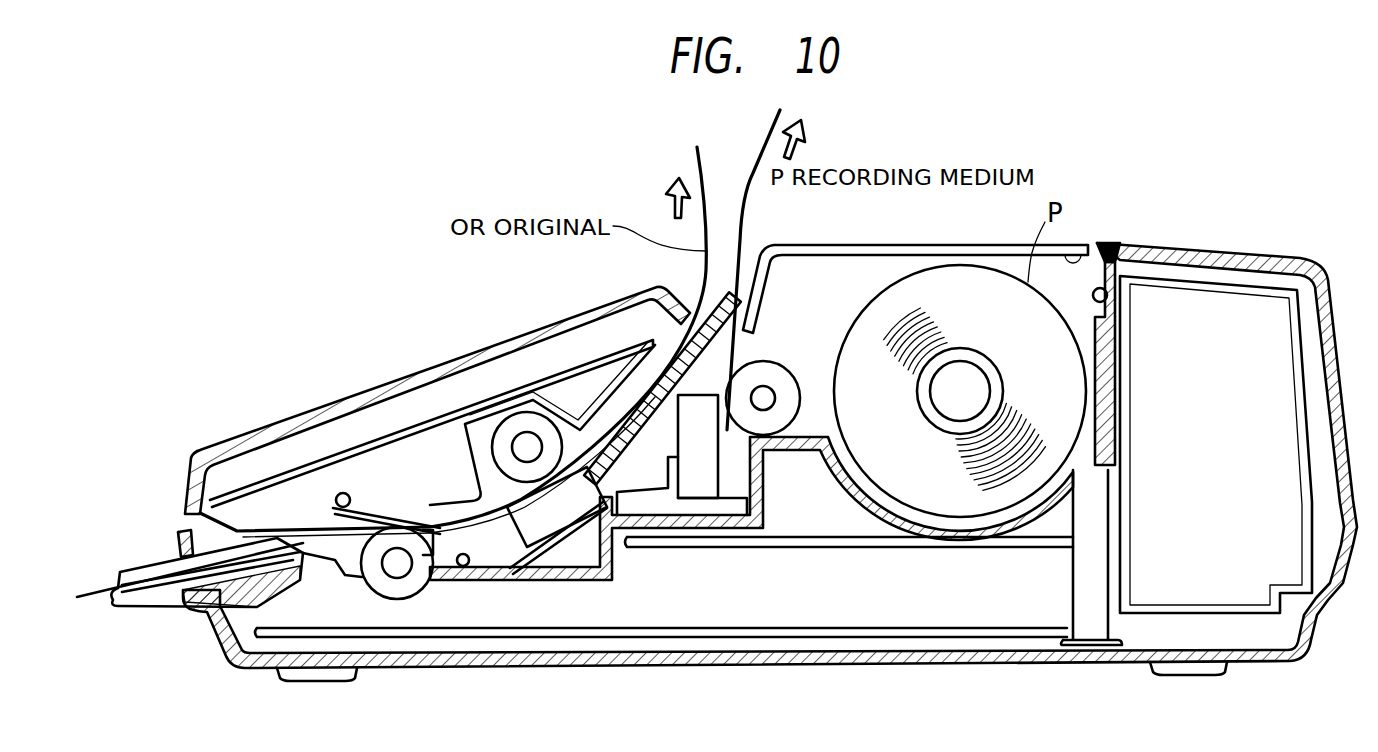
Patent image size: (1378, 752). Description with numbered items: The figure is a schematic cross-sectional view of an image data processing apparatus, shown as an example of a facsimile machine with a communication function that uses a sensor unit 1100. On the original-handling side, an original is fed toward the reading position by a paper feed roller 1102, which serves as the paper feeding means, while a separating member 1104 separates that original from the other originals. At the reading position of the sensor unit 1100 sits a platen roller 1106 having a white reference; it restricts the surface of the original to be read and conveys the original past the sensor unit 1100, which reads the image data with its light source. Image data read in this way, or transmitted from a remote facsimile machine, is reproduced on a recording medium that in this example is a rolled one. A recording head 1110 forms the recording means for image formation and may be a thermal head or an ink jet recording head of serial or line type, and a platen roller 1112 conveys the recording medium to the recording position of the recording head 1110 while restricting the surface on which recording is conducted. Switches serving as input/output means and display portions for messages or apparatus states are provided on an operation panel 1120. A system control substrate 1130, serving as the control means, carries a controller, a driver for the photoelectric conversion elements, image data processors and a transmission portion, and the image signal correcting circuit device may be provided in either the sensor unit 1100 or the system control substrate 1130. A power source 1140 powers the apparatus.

The sensor unit 1100 is at (550, 533).
The paper feed roller 1102 is at (395, 600).
The separating member 1104 is at (380, 505).
The platen roller 1106 is at (518, 414).
The recording head 1110 is at (700, 498).
The platen roller 1112 is at (768, 392).
The operation panel 1120 is at (257, 428).
The system control substrate 1130 is at (952, 640).
The power source 1140 is at (1233, 302).